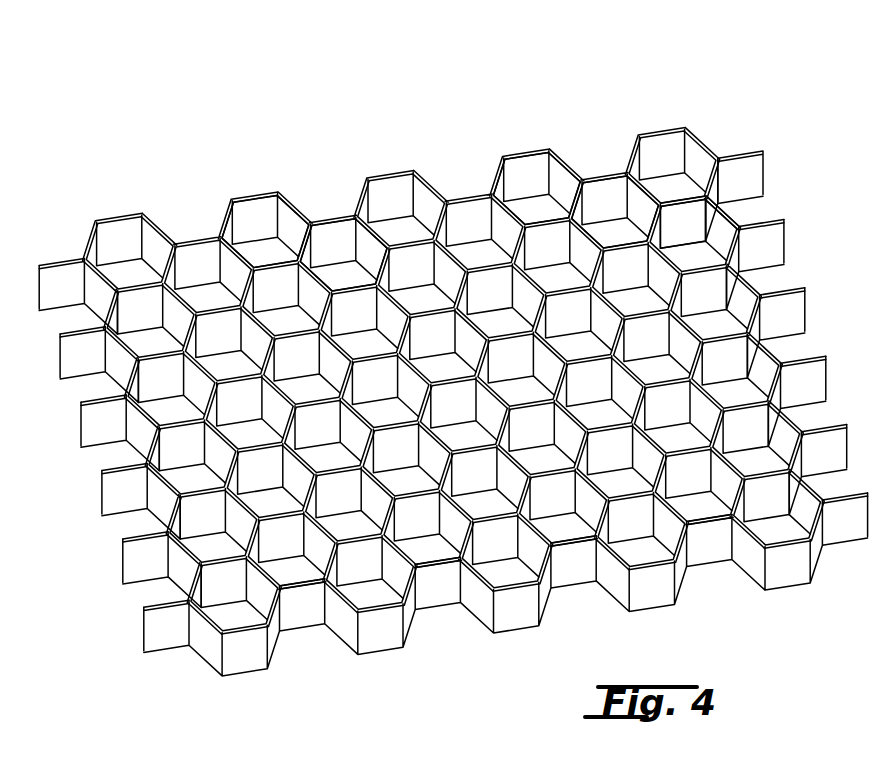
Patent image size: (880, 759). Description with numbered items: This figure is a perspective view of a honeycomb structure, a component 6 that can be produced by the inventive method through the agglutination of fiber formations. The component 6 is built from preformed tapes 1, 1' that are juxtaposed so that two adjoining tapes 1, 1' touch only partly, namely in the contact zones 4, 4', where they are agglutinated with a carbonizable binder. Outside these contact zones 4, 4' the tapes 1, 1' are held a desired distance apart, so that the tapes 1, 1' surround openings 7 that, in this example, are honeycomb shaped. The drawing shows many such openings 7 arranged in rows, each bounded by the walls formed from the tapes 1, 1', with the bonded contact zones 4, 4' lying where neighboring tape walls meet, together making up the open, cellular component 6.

The component 6 is at (510, 136).
The opening 7 is at (335, 228).
The contact zone 4 is at (699, 154).
The contact zone 4' is at (741, 238).
The tape 1 is at (771, 212).
The tape 1' is at (778, 177).